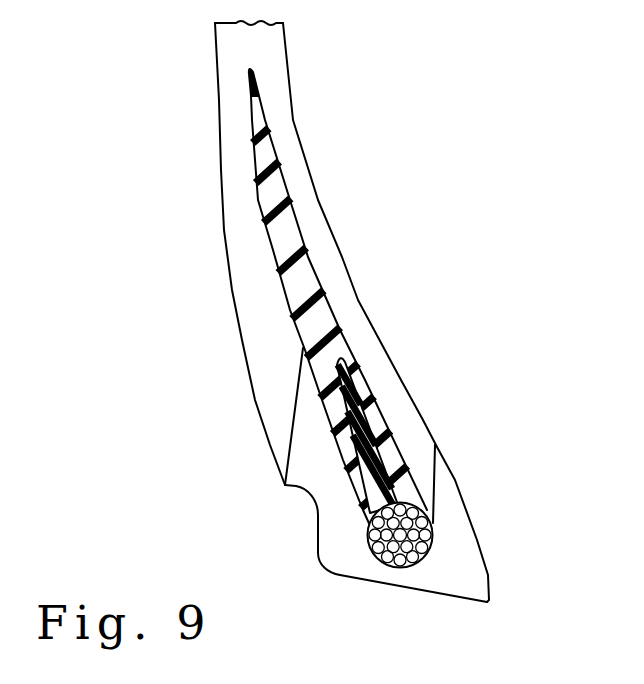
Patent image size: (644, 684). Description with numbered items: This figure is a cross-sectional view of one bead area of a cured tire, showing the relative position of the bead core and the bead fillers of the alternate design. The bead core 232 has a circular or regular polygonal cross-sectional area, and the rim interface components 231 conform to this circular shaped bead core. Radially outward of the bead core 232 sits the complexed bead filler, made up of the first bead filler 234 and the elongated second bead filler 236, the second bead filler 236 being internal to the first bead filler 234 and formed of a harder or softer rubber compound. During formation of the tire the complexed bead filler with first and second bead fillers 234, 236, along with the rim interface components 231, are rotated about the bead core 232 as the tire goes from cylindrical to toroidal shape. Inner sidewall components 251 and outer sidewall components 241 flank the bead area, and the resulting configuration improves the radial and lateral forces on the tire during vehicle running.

The rim interface components 231 is at (455, 573).
The bead core 232 is at (432, 542).
The first bead filler 234 is at (307, 278).
The second bead filler 236 is at (356, 428).
The outer sidewall components 241 is at (216, 202).
The inner sidewall components 251 is at (302, 144).